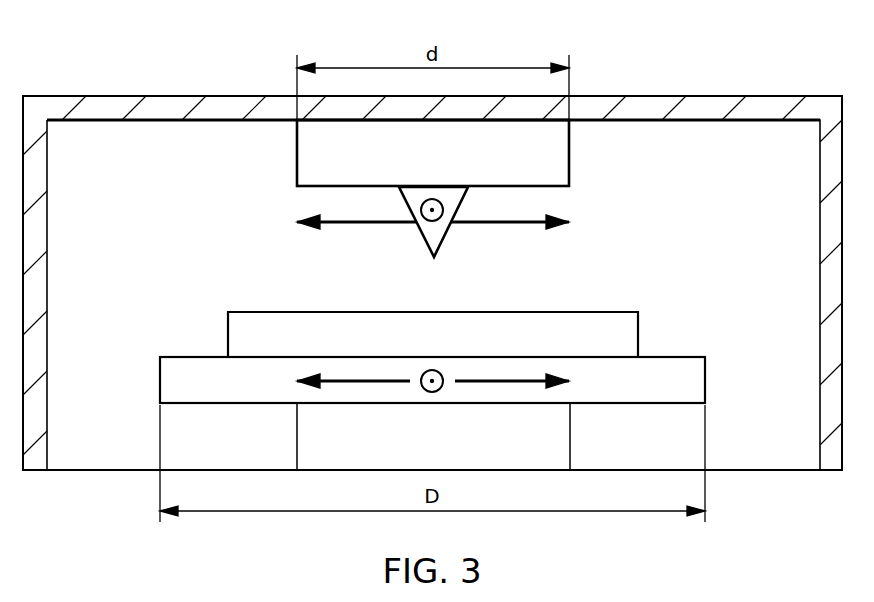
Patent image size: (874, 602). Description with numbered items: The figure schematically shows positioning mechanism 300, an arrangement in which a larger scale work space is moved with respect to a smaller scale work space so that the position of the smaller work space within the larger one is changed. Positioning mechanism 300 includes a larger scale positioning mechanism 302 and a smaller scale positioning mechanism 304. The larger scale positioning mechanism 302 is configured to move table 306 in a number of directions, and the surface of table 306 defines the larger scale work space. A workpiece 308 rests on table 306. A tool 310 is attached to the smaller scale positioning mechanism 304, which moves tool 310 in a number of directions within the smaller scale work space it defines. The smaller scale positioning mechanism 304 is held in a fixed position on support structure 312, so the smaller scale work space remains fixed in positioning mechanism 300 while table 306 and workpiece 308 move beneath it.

The positioning mechanism 300 is at (190, 58).
The larger scale positioning mechanism 302 is at (571, 436).
The smaller scale positioning mechanism 304 is at (297, 152).
The table 306 is at (160, 379).
The workpiece 308 is at (228, 336).
The tool 310 is at (418, 234).
The support structure 312 is at (671, 121).